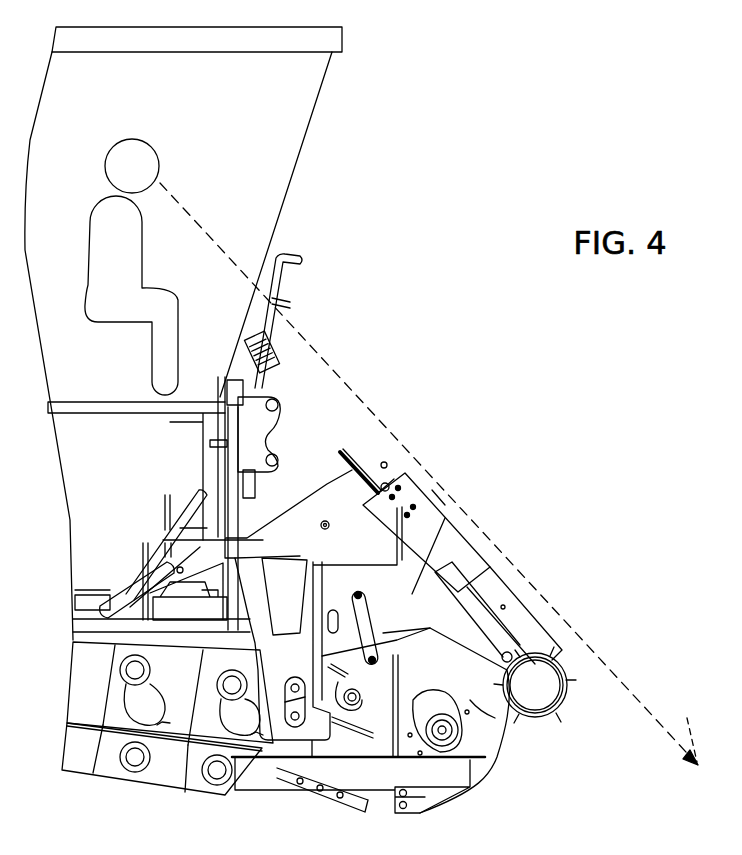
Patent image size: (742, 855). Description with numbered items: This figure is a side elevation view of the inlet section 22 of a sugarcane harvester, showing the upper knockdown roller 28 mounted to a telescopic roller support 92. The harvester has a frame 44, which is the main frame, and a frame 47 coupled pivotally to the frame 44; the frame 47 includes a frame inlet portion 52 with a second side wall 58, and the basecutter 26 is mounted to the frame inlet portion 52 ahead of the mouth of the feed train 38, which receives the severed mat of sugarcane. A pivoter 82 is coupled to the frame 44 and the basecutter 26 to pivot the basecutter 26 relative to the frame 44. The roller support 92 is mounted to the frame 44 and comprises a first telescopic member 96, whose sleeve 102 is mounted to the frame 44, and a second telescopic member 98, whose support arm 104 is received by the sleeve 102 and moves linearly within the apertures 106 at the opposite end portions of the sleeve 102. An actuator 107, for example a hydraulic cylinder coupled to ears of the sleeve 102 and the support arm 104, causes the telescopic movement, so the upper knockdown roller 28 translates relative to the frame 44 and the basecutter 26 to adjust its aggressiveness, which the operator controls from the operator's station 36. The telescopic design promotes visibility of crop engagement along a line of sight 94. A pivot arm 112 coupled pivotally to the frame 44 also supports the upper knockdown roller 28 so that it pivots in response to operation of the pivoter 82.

The inlet section 22 is at (472, 816).
The basecutter 26 is at (330, 810).
The upper knockdown roller 28 is at (562, 710).
The operator's station 36 is at (302, 152).
The feed train 38 is at (168, 775).
The frame 44 is at (363, 507).
The frame 47 is at (190, 775).
The frame inlet portion 52 is at (498, 735).
The second side wall 58 is at (495, 717).
The pivoter 82 is at (381, 603).
The telescopic roller support 92 is at (373, 458).
The line of sight 94 is at (695, 762).
The first telescopic member 96 is at (440, 491).
The second telescopic member 98 is at (548, 614).
The sleeve 102 is at (423, 515).
The support arm 104 is at (515, 605).
The aperture 106 is at (385, 485).
The actuator 107 is at (470, 613).
The pivot arm 112 is at (410, 580).